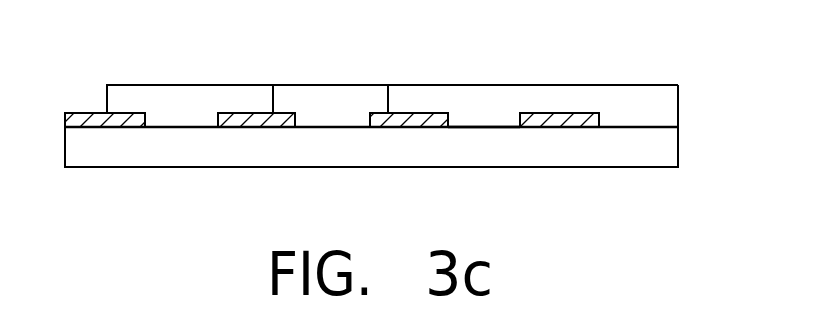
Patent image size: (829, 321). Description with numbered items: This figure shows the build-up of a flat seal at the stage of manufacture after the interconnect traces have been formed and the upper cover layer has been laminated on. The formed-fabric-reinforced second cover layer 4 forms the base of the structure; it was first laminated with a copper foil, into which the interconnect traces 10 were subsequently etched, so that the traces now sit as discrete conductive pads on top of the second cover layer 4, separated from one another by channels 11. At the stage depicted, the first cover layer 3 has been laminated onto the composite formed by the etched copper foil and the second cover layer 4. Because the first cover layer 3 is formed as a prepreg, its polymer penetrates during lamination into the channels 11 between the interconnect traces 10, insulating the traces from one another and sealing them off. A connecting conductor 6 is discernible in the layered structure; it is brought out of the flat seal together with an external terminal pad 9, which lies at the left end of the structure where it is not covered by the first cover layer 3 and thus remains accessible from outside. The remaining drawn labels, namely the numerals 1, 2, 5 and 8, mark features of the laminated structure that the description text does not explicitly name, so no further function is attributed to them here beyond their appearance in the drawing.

The dielectric layer 1 is at (213, 85).
The substrate 2 is at (663, 169).
The first cover layer 3 is at (170, 110).
The second cover layer 4 is at (612, 142).
The circuit assembly 5 is at (704, 95).
The connecting conductor 6 is at (412, 117).
The conductor pads 8 is at (279, 117).
The external terminal pad 9 is at (87, 118).
The interconnect traces 10 is at (548, 118).
The channels 11 is at (480, 118).